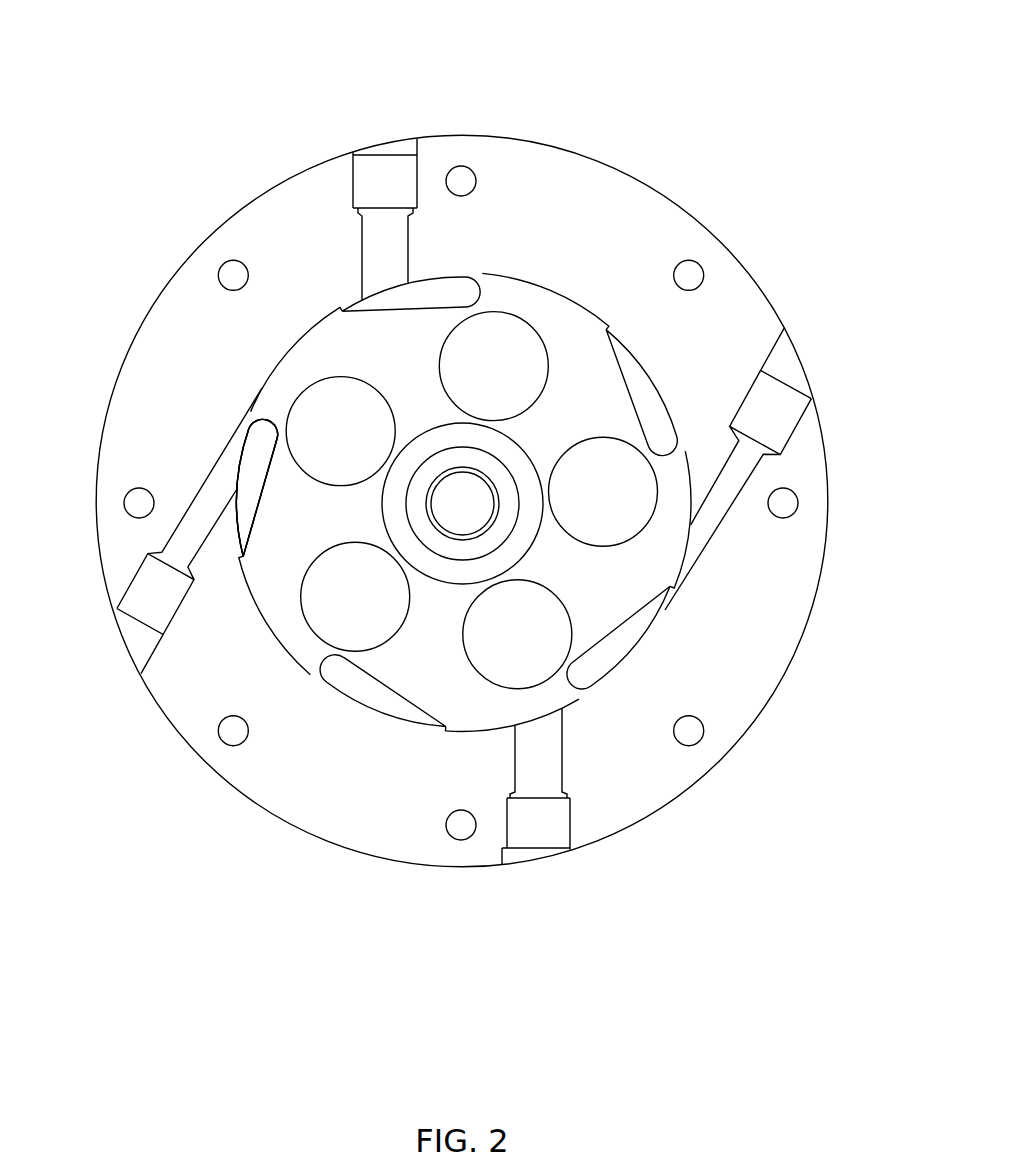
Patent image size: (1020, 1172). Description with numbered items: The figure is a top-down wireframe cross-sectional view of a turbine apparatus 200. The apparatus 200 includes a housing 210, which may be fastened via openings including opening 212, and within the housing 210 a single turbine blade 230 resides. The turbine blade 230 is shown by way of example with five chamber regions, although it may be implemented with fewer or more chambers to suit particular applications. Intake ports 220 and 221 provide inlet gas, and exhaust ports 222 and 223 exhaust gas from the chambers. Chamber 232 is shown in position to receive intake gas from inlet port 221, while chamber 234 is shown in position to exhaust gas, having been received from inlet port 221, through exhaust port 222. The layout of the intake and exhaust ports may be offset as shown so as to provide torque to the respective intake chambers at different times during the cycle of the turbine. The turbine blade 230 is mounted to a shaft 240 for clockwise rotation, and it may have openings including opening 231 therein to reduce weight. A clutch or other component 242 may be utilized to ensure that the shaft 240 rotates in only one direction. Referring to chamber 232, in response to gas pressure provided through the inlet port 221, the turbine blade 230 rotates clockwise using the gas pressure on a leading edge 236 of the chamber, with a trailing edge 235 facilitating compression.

The turbine apparatus 200 is at (683, 82).
The housing 210 is at (768, 300).
The opening 212 is at (462, 167).
The intake port 220 is at (798, 362).
The intake port 221 is at (130, 643).
The exhaust port 222 is at (378, 148).
The exhaust port 223 is at (531, 866).
The turbine blade 230 is at (598, 316).
The opening 231 is at (522, 318).
The chamber 232 is at (258, 477).
The chamber 234 is at (456, 275).
The trailing edge 235 is at (243, 541).
The leading edge 236 is at (256, 427).
The shaft 240 is at (455, 468).
The clutch or other component 242 is at (522, 451).